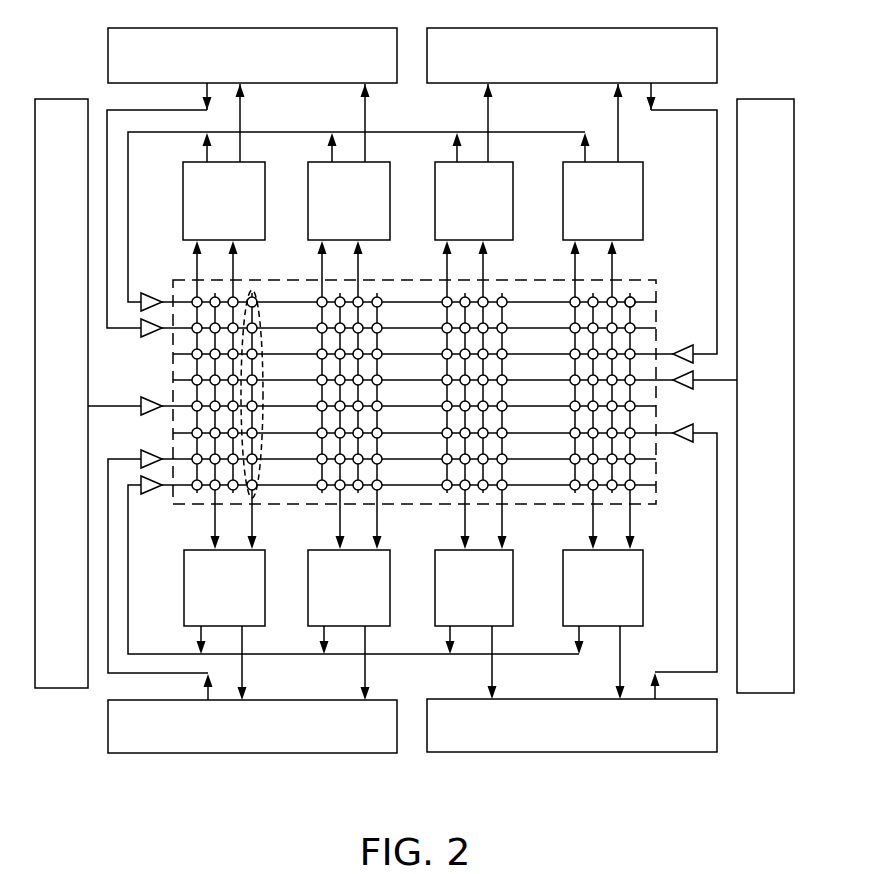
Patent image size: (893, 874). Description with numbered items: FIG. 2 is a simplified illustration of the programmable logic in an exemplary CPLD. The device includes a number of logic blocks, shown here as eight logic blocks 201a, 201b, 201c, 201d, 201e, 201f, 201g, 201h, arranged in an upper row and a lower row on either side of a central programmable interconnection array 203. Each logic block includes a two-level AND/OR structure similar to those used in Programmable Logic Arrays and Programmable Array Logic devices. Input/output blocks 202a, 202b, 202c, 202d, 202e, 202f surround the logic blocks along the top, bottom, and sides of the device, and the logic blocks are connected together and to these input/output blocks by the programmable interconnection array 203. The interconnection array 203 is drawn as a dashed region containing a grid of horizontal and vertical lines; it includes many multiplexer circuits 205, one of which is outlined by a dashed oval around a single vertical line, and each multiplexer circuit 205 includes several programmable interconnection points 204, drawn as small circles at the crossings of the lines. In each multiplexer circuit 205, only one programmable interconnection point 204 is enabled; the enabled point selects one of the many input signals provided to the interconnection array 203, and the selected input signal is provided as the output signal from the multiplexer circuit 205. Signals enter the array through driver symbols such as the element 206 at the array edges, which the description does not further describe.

The logic block 201a is at (200, 225).
The logic block 201b is at (325, 225).
The logic block 201c is at (450, 225).
The logic block 201d is at (579, 225).
The logic block 201e is at (200, 610).
The logic block 201f is at (327, 610).
The logic block 201g is at (450, 610).
The logic block 201h is at (579, 610).
The input/output block 202a is at (228, 76).
The input/output block 202b is at (548, 76).
The input/output block 202c is at (742, 435).
The input/output block 202d is at (548, 745).
The input/output block 202e is at (228, 746).
The input/output block 202f is at (40, 435).
The programmable interconnection array 203 is at (186, 279).
The programmable interconnection point 204 is at (636, 296).
The multiplexer circuit 205 is at (252, 290).
The buffer 206 is at (151, 396).